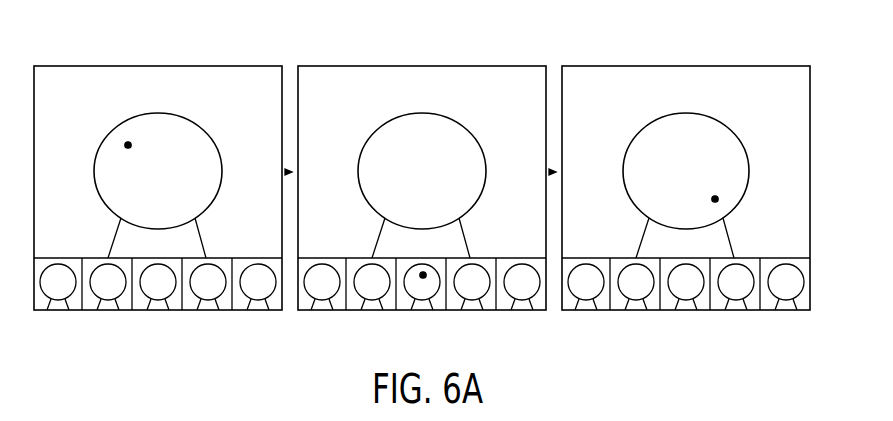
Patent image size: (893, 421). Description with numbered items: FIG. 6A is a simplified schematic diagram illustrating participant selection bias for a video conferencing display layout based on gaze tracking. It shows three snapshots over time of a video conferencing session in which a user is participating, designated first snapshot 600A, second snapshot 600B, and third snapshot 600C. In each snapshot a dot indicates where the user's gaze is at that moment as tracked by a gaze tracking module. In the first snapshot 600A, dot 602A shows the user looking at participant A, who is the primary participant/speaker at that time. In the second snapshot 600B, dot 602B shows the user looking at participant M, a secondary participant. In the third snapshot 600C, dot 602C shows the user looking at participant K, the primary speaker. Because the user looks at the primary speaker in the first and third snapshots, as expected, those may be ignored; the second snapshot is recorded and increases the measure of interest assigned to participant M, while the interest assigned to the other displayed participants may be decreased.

The first snapshot 600A is at (158, 66).
The second snapshot 600B is at (423, 66).
The third snapshot 600C is at (686, 66).
The dot 602A is at (128, 146).
The dot 602B is at (423, 276).
The dot 602C is at (716, 200).